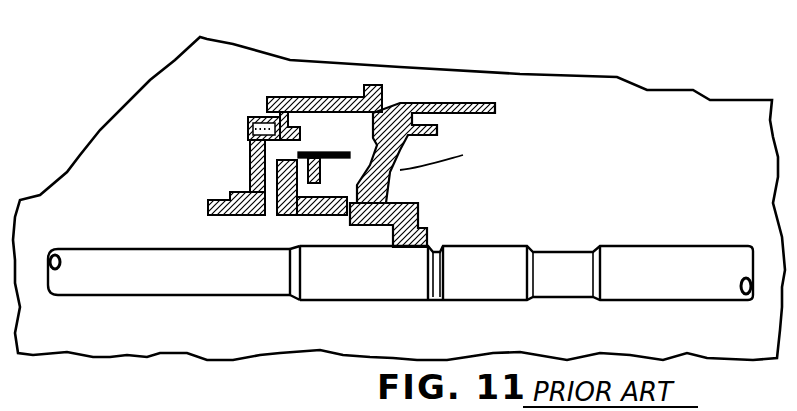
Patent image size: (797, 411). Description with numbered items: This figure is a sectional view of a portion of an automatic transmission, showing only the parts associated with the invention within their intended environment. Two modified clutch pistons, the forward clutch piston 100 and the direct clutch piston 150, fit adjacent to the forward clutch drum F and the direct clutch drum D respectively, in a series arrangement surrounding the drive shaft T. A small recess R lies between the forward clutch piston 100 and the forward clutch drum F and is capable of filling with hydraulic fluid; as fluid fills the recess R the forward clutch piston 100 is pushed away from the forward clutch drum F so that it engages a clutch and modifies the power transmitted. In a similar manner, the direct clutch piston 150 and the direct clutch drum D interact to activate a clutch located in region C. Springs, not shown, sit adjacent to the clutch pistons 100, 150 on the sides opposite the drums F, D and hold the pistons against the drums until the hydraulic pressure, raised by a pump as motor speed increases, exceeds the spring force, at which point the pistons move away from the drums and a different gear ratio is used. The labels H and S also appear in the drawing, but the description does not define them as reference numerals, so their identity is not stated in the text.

The housing H is at (582, 77).
The drive shaft T is at (633, 260).
The clutch region C is at (347, 133).
The direct clutch piston 150 is at (290, 122).
The direct clutch drum D is at (248, 165).
The sleeve bearing S is at (332, 188).
The forward clutch drum F is at (397, 112).
The forward clutch piston 100 is at (417, 181).
The recess R is at (441, 155).